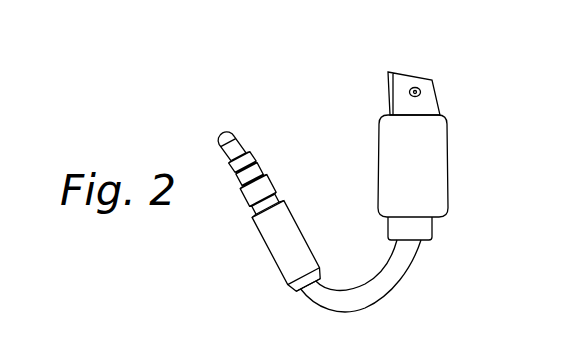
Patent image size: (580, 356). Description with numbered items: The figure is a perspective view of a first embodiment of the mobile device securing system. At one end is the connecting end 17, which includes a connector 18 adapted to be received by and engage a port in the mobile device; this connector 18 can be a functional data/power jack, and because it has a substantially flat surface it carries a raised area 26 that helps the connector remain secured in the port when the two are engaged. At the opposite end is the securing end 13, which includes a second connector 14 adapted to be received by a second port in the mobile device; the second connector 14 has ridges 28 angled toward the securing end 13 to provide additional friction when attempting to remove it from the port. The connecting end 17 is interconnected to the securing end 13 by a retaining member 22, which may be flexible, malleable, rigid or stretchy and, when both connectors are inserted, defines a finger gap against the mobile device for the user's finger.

The securing end 13 is at (272, 256).
The second connector 14 is at (241, 195).
The ridges 28 is at (258, 157).
The retaining member 22 is at (385, 291).
The connecting end 17 is at (434, 167).
The connector 18 is at (433, 100).
The raised area 26 is at (419, 85).